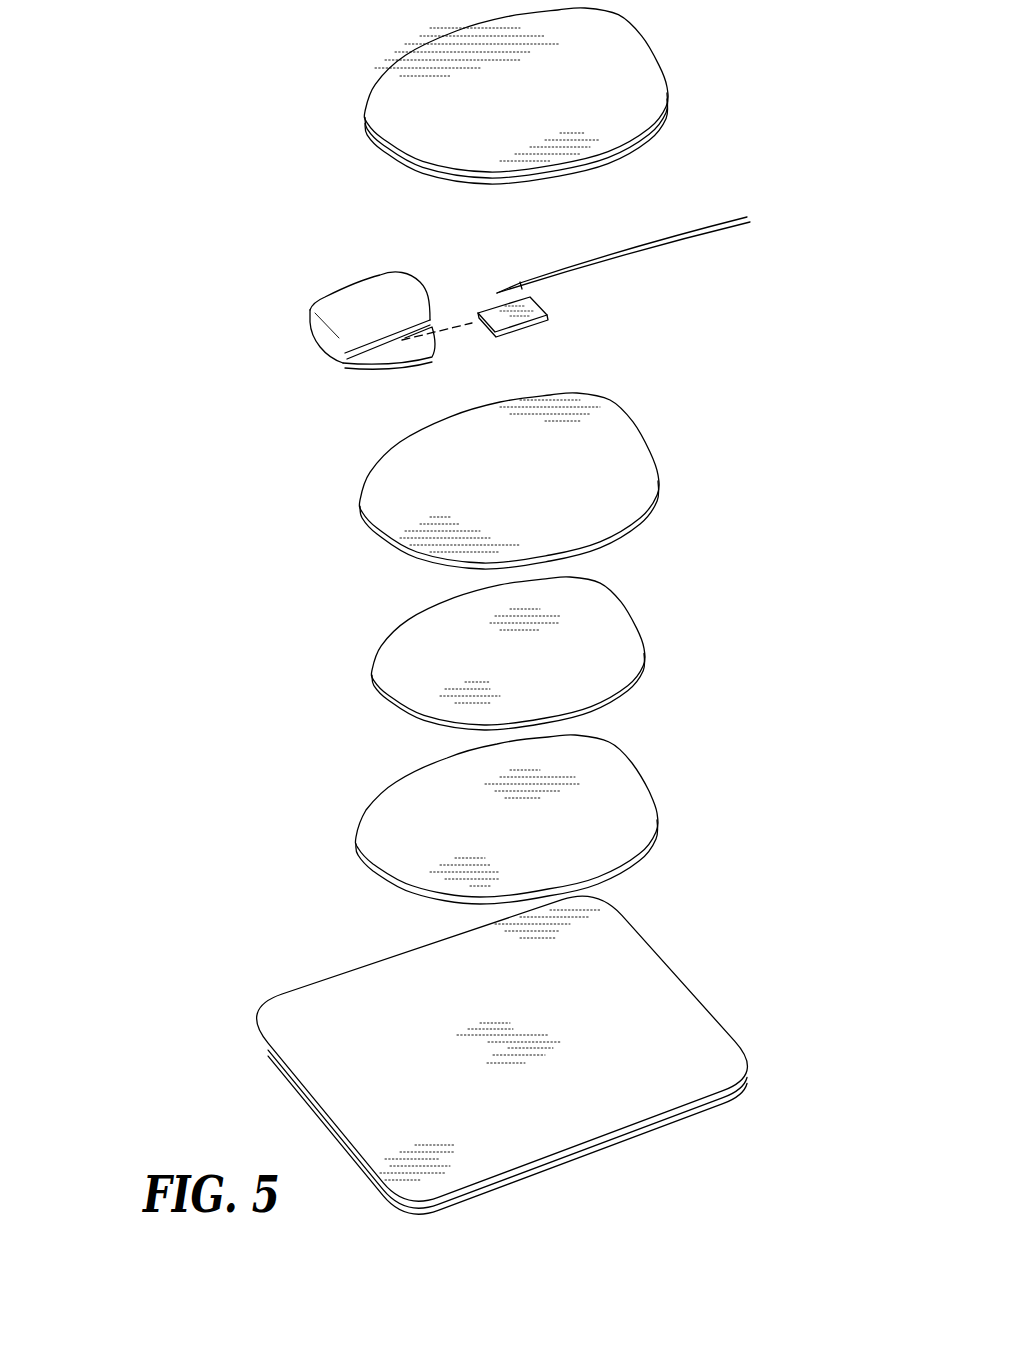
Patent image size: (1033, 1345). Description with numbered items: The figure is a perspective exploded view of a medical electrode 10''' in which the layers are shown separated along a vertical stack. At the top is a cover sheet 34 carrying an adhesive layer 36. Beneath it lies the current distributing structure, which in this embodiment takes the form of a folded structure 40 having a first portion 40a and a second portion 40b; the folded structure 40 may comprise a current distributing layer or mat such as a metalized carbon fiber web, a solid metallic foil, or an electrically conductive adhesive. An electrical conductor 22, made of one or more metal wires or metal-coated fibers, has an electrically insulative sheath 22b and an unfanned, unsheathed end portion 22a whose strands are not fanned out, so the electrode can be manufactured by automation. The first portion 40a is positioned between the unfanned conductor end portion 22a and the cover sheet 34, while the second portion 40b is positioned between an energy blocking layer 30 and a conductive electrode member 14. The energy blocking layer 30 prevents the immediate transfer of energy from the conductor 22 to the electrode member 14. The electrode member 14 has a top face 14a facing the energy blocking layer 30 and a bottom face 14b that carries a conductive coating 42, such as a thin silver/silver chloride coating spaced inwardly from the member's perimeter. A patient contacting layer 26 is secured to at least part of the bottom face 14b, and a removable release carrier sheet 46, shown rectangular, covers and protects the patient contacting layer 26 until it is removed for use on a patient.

The medical electrode 10''' is at (448, 611).
The cover sheet 34 is at (365, 100).
The adhesive layer 36 is at (645, 140).
The folded structure 40 is at (318, 300).
The first portion 40a is at (375, 297).
The second portion 40b is at (395, 352).
The electrical conductor 22 is at (705, 238).
The unfanned, unsheathed end portion 22a is at (497, 290).
The electrically insulative sheath 22b is at (605, 262).
The energy blocking layer 30 is at (538, 322).
The conductive electrode member 14 is at (368, 478).
The top face 14a is at (538, 492).
The bottom face 14b is at (640, 522).
The conductive coating 42 is at (375, 650).
The patient contacting layer 26 is at (365, 810).
The removable release carrier sheet 46 is at (272, 993).